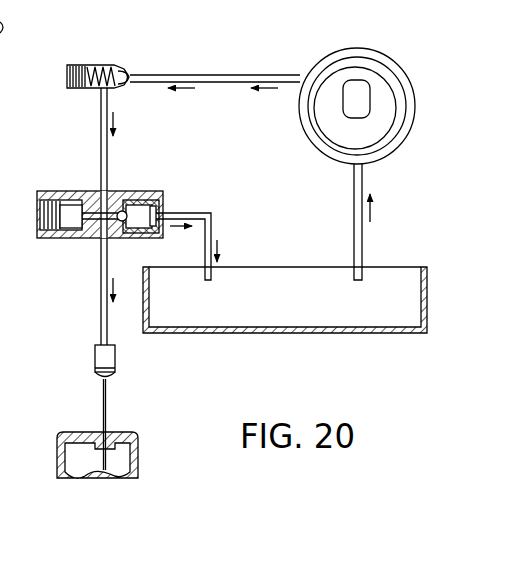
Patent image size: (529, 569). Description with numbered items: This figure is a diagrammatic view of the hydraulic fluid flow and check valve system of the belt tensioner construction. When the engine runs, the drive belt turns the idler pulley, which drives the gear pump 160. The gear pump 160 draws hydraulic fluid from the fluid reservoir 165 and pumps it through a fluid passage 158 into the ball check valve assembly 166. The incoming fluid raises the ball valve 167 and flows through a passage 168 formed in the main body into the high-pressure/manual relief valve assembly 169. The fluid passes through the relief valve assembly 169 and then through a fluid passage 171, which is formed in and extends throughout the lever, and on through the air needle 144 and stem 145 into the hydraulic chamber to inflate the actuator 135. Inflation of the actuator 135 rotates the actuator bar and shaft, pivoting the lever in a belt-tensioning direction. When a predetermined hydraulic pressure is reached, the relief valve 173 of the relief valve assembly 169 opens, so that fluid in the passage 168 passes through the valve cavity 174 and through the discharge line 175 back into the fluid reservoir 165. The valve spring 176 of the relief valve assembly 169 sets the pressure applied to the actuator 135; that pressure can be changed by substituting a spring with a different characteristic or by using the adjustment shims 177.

The actuator 135 is at (55, 452).
The air needle 144 is at (115, 368).
The stem 145 is at (107, 407).
The fluid passage 158 is at (216, 75).
The gear pump 160 is at (399, 66).
The fluid reservoir 165 is at (335, 333).
The ball check valve assembly 166 is at (109, 63).
The ball valve 167 is at (128, 82).
The passage 168 is at (100, 122).
The high-pressure/manual relief valve assembly 169 is at (56, 189).
The fluid passage 171 is at (100, 307).
The relief valve 173 is at (129, 202).
The valve cavity 174 is at (116, 70).
The discharge line 175 is at (166, 214).
The valve spring 176 is at (153, 212).
The adjustment shims 177 is at (151, 199).